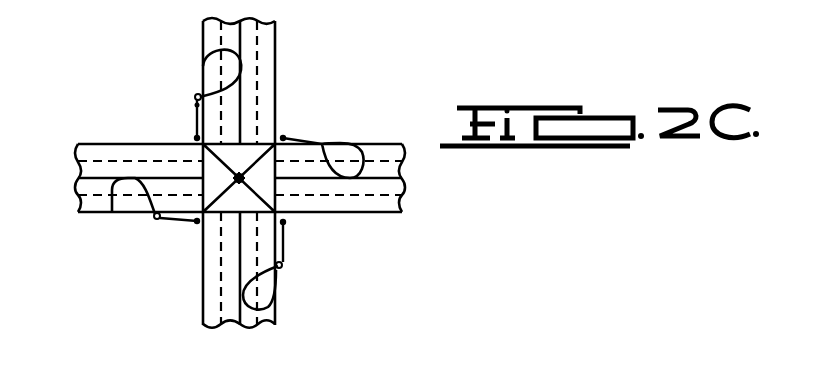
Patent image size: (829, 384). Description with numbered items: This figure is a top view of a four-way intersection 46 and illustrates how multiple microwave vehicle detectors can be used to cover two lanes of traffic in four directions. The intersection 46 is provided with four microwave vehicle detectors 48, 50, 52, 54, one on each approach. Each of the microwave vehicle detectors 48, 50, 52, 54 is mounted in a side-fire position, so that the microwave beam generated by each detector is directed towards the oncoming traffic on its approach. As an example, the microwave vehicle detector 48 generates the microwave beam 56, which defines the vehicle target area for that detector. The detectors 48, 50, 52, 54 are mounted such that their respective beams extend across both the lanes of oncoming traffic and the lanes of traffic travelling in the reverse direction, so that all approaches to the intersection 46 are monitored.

The four-way intersection 46 is at (398, 82).
The microwave vehicle detector 48 is at (195, 97).
The microwave vehicle detector 50 is at (320, 143).
The microwave vehicle detector 52 is at (282, 264).
The microwave vehicle detector 54 is at (156, 219).
The microwave beam 56 is at (218, 66).